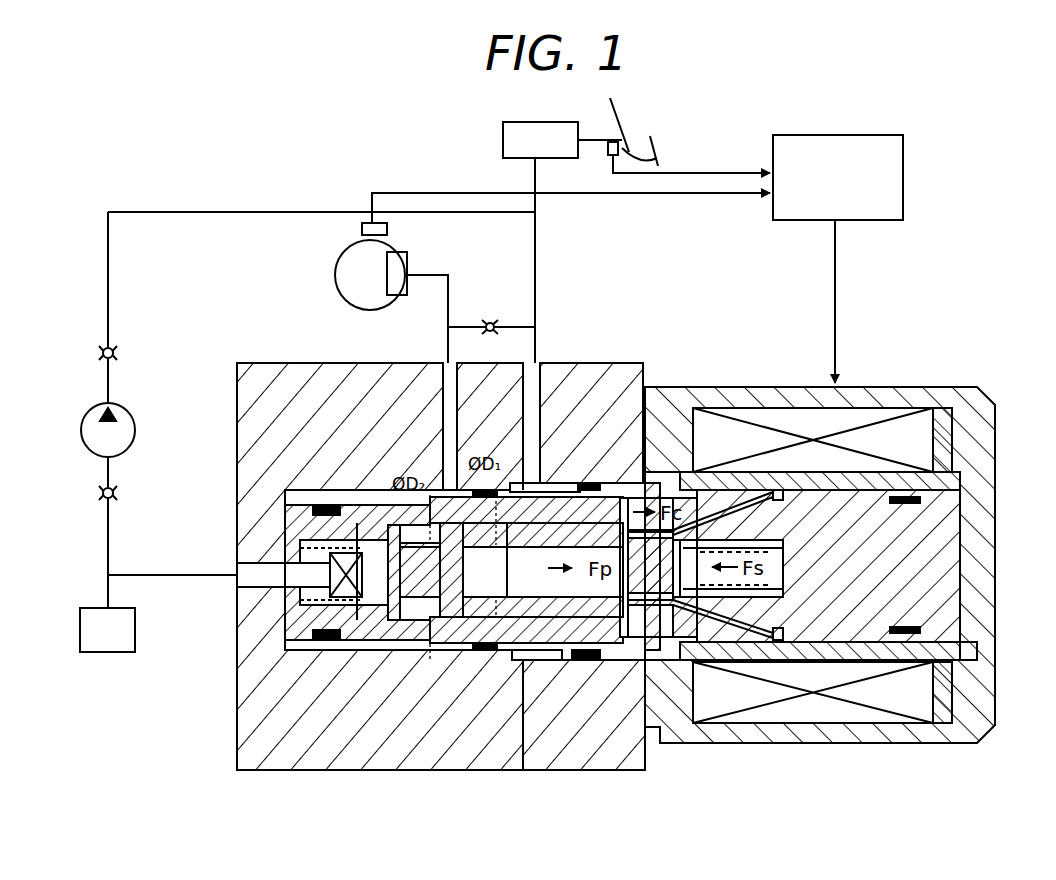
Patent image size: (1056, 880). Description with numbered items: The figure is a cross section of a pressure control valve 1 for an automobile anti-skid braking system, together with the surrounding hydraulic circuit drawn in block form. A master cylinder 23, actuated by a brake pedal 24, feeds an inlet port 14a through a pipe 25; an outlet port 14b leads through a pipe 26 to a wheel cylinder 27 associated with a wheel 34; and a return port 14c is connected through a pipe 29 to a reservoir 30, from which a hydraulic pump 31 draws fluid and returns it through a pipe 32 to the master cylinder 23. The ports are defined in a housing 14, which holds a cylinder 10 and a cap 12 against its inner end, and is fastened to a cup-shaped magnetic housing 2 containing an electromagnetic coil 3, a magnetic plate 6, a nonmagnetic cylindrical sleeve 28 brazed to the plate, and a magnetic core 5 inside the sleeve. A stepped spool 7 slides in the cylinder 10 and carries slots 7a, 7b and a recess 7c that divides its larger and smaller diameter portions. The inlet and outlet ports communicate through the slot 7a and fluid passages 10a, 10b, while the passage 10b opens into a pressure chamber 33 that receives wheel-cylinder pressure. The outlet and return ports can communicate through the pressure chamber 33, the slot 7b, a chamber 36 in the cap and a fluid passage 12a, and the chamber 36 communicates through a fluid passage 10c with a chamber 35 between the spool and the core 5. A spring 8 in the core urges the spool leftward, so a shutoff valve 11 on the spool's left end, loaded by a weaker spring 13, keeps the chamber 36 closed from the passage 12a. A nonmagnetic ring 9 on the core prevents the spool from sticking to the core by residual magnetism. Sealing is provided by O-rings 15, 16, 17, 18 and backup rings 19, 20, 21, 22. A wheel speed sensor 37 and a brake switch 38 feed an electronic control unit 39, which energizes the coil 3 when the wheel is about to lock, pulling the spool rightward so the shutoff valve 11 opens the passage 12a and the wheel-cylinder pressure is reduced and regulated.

The pressure control valve 1 is at (733, 322).
The cup-shaped housing 2 is at (858, 387).
The electromagnetic coil 3 is at (915, 392).
The core 5 is at (950, 560).
The plate 6 is at (665, 743).
The stepped spool 7 is at (735, 640).
The slot 7a is at (452, 620).
The slot 7b is at (395, 525).
The recess 7c is at (400, 640).
The spring 8 is at (950, 535).
The ring 9 is at (810, 645).
The cylinder 10 is at (540, 680).
The fluid passage 10a is at (600, 385).
The fluid passage 10b is at (440, 420).
The fluid passage 10c is at (580, 660).
The shutoff valve 11 is at (358, 650).
The cap 12 is at (290, 633).
The fluid passage 12a is at (250, 490).
The spring 13 is at (290, 592).
The housing 14 is at (283, 770).
The inlet port 14a is at (545, 385).
The outlet port 14b is at (445, 380).
The return port 14c is at (252, 563).
The O-ring 15 is at (905, 635).
The O-ring 16 is at (600, 660).
The O-ring 17 is at (498, 660).
The O-ring 18 is at (325, 650).
The backup ring 19 is at (940, 690).
The backup ring 20 is at (635, 660).
The backup ring 21 is at (480, 650).
The backup ring 22 is at (290, 672).
The master cylinder 23 is at (503, 135).
The brake pedal 24 is at (620, 112).
The pipe 25 is at (537, 248).
The pipe 26 is at (452, 290).
The wheel cylinder 27 is at (407, 258).
The cylindrical sleeve 28 is at (977, 645).
The pipe 29 is at (160, 575).
The reservoir 30 is at (80, 630).
The hydraulic pump 31 is at (83, 430).
The pipe 32 is at (272, 212).
The pressure chamber 33 is at (432, 600).
The wheel 34 is at (345, 262).
The chamber 35 is at (725, 490).
The chamber 36 is at (283, 390).
The wheel speed sensor 37 is at (368, 222).
The pedal switch 38 is at (605, 150).
The electronic control unit 39 is at (880, 135).